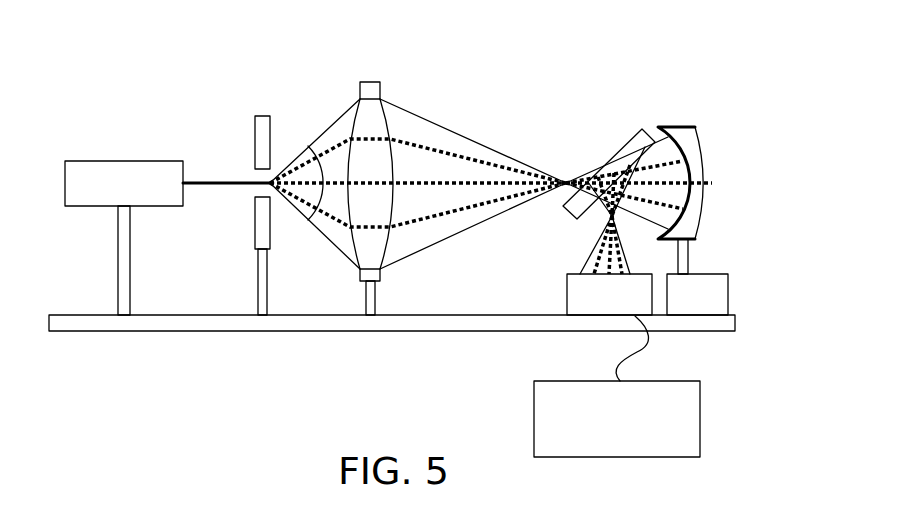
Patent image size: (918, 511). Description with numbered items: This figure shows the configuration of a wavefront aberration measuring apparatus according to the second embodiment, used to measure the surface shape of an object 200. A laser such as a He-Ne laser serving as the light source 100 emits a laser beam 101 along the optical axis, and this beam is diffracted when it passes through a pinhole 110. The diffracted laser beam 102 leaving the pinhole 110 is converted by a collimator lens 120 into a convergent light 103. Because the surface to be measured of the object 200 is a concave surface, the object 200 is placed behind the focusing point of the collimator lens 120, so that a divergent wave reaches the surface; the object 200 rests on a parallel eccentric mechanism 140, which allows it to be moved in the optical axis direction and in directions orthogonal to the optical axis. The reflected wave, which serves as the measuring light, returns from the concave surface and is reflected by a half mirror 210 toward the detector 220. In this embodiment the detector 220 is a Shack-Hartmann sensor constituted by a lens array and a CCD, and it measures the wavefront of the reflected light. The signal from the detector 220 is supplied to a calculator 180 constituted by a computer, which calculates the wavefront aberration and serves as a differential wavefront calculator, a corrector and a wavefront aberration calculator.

The light source 100 is at (88, 162).
The laser beam 101 is at (204, 187).
The pinhole 110 is at (266, 117).
The laser beam diffracted at the pinhole 102 is at (310, 215).
The collimator lens 120 is at (368, 83).
The convergent light 103 is at (430, 222).
The half mirror 210 is at (620, 140).
The object 200 is at (697, 142).
The parallel eccentric mechanism 140 is at (707, 302).
The detector 220 is at (588, 300).
The calculator 180 is at (700, 434).